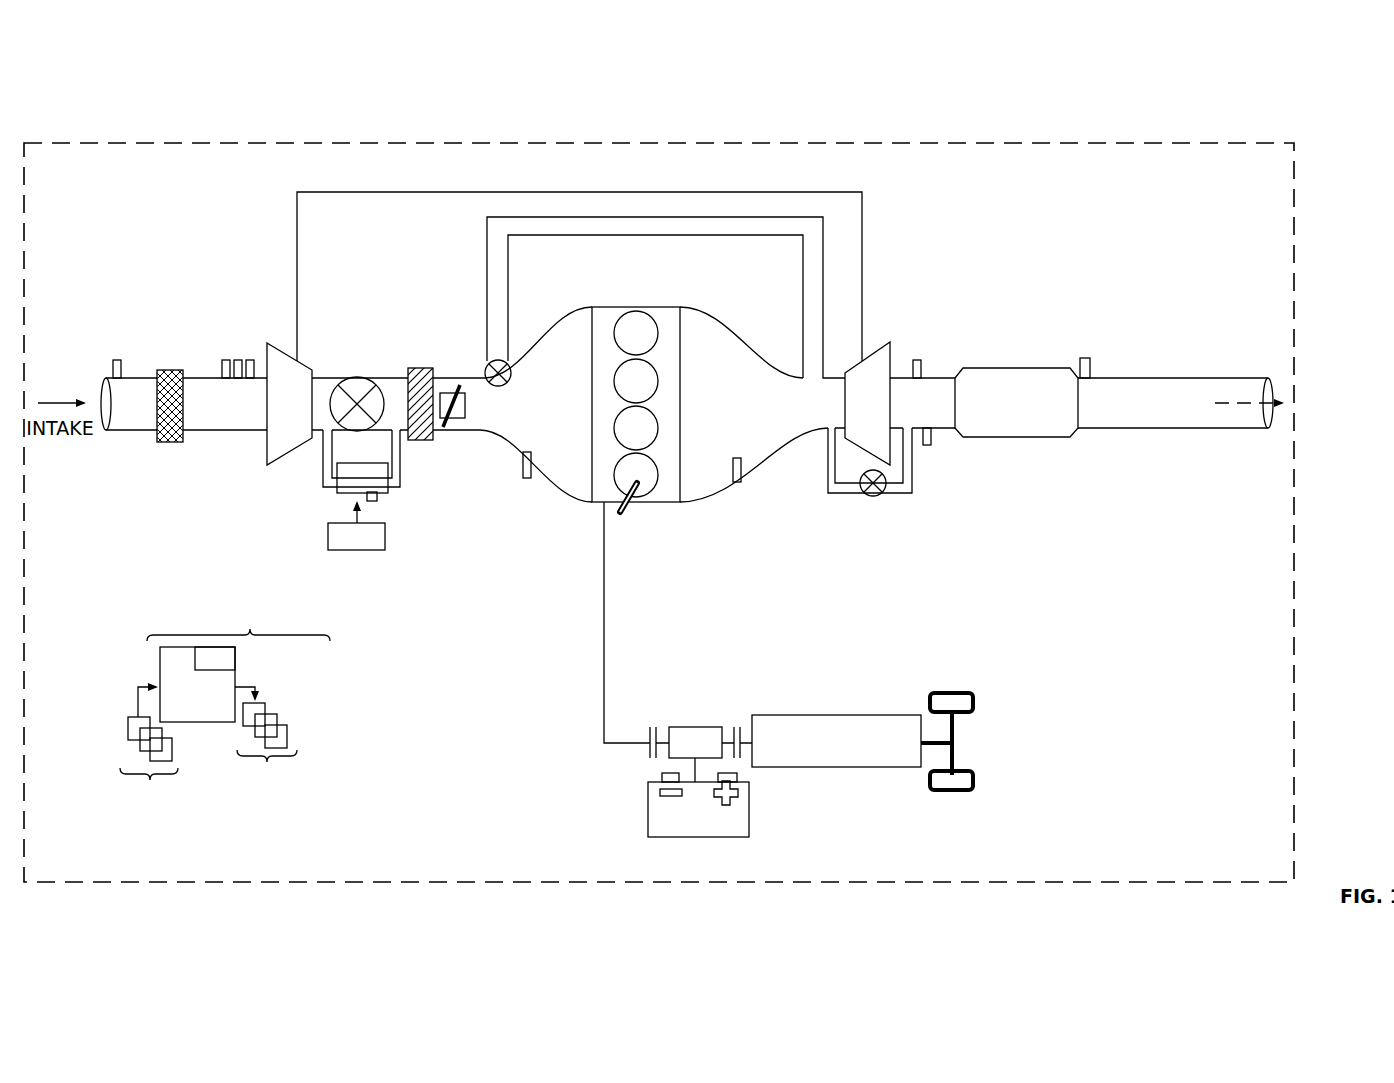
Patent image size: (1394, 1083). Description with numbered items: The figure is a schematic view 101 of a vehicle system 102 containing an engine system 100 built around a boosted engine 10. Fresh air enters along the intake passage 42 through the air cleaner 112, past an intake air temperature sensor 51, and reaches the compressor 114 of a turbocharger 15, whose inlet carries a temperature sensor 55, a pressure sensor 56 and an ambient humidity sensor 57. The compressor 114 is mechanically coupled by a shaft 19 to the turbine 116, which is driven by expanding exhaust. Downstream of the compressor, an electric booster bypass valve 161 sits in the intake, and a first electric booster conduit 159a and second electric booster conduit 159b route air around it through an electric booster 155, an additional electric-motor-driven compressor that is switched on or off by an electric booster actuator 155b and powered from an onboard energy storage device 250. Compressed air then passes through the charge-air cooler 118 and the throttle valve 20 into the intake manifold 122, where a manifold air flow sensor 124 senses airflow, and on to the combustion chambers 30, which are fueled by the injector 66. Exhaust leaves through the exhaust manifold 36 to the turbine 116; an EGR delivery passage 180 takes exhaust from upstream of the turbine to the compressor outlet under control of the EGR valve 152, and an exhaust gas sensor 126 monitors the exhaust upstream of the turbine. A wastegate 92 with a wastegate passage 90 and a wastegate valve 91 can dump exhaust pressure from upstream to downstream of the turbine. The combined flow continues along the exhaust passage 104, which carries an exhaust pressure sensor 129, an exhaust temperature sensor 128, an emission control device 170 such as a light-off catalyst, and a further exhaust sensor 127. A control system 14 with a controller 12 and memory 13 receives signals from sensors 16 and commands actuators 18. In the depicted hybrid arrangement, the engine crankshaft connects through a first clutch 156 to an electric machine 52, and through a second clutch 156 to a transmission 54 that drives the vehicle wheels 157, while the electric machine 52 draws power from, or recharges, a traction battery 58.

The schematic view 101 is at (1310, 66).
The vehicle system 102 is at (208, 138).
The engine system 100 is at (1132, 262).
The engine 10 is at (650, 404).
The combustion chambers 30 is at (656, 326).
The exhaust manifold 36 is at (733, 413).
The intake manifold 122 is at (525, 413).
The intake passage 42 is at (111, 432).
The air cleaner 112 is at (171, 370).
The intake air temperature (IAT) sensor 51 is at (117, 360).
The temperature sensor 55 is at (226, 360).
The pressure sensor 56 is at (238, 360).
The ambient humidity sensor 57 is at (250, 360).
The turbocharger 15 is at (559, 415).
The compressor 114 is at (289, 404).
The turbine 116 is at (867, 403).
The shaft 19 is at (682, 192).
The electric booster bypass valve 161 is at (356, 377).
The first electric booster conduit 159a is at (323, 480).
The second electric booster conduit 159b is at (400, 487).
The electric booster 155 is at (362, 478).
The electric booster actuator 155b is at (377, 500).
The onboard energy storage device 250 is at (356, 526).
The charge-air cooler 118 is at (418, 368).
The throttle valve 20 is at (466, 407).
The manifold air flow (MAF) sensor 124 is at (524, 476).
The EGR valve 152 is at (511, 373).
The EGR delivery passage 180 is at (643, 236).
The exhaust gas sensor 126 is at (741, 470).
The injector 66 is at (623, 514).
The wastegate 92 is at (845, 484).
The wastegate passage 90 is at (828, 494).
The wastegate valve 91 is at (873, 496).
The exhaust passage 104 is at (950, 430).
The exhaust pressure sensor 129 is at (917, 360).
The exhaust temperature sensor 128 is at (927, 446).
The emission control device 170 is at (982, 368).
The exhaust gas sensor 127 is at (1085, 358).
The control system 14 is at (223, 701).
The controller 12 is at (188, 695).
The memory 13 is at (206, 669).
The sensors 16 is at (154, 755).
The actuators 18 is at (262, 755).
The clutches 156 is at (650, 730).
The electric machine 52 is at (690, 727).
The transmission 54 is at (880, 767).
The vehicle wheels 157 is at (956, 791).
The traction battery 58 is at (749, 810).